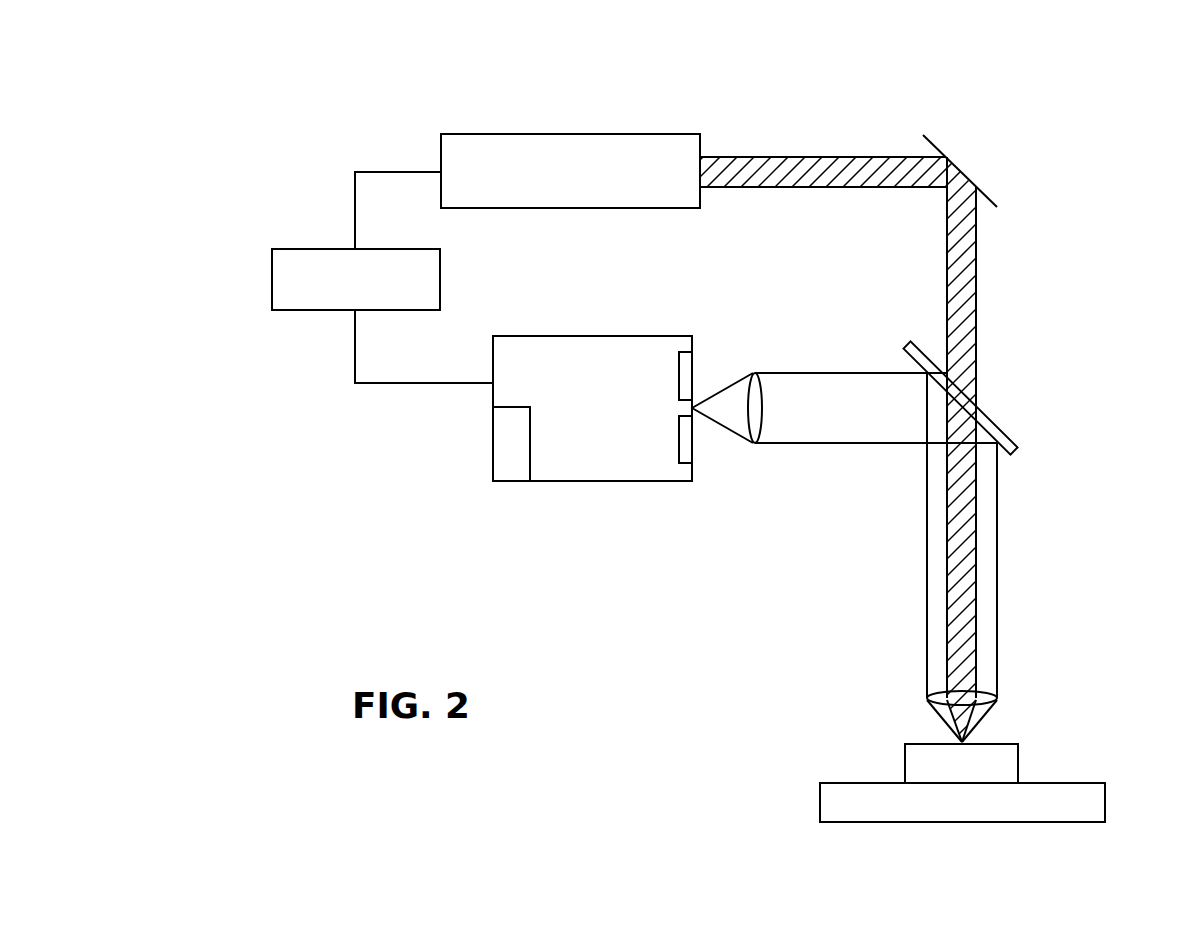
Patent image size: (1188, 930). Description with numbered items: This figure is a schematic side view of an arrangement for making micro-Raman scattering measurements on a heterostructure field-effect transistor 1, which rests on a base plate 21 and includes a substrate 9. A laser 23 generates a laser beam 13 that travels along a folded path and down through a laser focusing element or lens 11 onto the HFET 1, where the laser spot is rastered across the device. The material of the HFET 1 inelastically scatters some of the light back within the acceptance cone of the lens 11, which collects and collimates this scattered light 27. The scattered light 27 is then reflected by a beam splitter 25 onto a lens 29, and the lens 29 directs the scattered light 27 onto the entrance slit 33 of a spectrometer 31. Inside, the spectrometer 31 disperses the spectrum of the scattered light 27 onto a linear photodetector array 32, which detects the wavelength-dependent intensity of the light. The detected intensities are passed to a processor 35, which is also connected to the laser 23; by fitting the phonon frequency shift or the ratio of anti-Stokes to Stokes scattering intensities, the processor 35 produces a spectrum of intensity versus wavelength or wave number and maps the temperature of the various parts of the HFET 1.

The heterostructure field-effect transistor 1 is at (1078, 762).
The substrate 9 is at (912, 760).
The laser focusing element (lens) 11 is at (990, 698).
The laser beam 13 is at (973, 280).
The base plate 21 is at (828, 800).
The laser 23 is at (562, 150).
The beam splitter 25 is at (990, 422).
The scattered light 27 is at (933, 593).
The lens 29 is at (755, 437).
The spectrometer 31 is at (593, 465).
The linear photodetector array 32 is at (503, 440).
The entrance slit 33 is at (687, 365).
The processor 35 is at (272, 280).